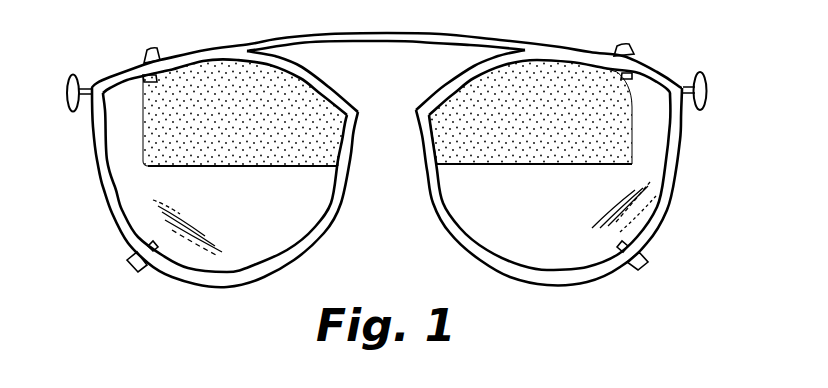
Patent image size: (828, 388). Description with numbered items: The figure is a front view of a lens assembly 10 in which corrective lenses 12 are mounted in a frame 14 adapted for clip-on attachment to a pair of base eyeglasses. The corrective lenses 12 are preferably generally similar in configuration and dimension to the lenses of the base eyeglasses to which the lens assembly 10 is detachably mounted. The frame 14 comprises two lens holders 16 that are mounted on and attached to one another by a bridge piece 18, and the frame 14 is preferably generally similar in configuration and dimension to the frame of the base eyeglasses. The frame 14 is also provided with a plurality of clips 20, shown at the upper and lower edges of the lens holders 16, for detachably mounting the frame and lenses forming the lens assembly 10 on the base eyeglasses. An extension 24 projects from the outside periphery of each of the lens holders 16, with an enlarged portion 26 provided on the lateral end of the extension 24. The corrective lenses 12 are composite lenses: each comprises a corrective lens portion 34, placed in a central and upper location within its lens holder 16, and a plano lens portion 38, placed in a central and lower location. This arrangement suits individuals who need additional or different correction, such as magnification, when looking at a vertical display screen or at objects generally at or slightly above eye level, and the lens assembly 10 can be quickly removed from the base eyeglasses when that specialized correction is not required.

The lens assembly 10 is at (148, 312).
The corrective lenses 12 is at (147, 196).
The frame 14 is at (337, 198).
The lens holders 16 is at (241, 287).
The bridge piece 18 is at (470, 33).
The clips 20 is at (147, 52).
The extension 24 is at (86, 100).
The enlarged portion 26 is at (70, 78).
The corrective lens portion 34 is at (255, 122).
The plano lens portion 38 is at (255, 231).